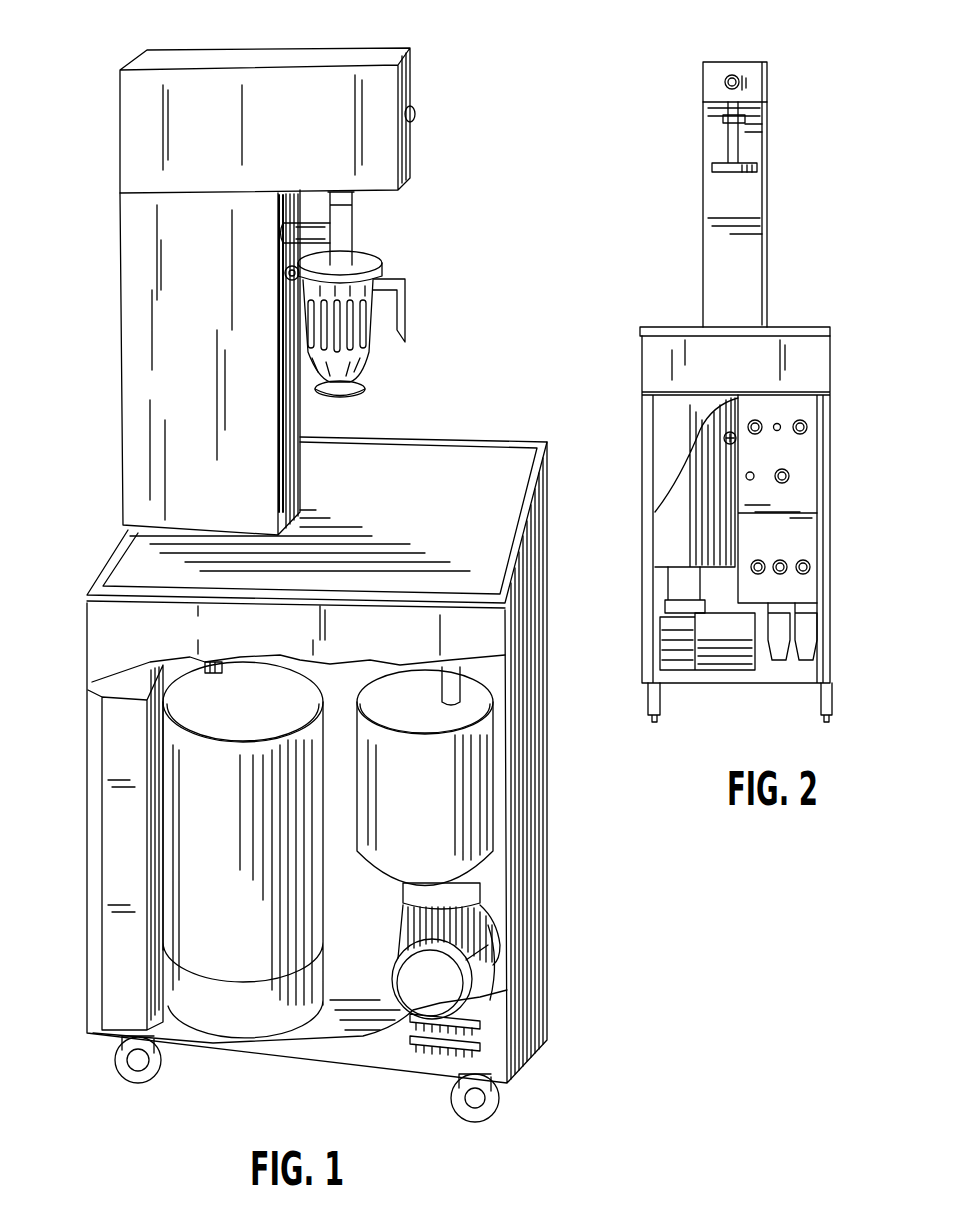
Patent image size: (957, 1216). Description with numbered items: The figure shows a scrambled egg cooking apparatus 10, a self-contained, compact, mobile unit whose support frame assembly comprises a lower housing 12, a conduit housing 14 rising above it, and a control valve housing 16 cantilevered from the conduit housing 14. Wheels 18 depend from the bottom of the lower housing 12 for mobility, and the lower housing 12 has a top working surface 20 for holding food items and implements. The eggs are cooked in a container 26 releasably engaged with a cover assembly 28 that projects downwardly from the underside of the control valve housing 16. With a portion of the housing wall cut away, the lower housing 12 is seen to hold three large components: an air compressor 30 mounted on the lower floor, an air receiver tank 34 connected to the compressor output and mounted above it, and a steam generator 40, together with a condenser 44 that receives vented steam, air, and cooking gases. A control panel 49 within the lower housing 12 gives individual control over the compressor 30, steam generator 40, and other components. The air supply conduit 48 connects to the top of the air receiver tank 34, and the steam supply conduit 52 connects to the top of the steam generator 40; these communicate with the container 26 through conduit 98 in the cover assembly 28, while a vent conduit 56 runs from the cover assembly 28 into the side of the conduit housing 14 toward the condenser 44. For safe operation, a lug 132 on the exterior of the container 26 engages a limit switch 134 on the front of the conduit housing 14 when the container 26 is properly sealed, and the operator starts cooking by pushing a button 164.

In FIG. 1, the scrambled egg cooking apparatus 10 is at (462, 400).
In FIG. 1, the lower housing 12 is at (558, 811).
In FIG. 2, the lower housing 12 is at (631, 431).
In FIG. 1, the conduit housing 14 is at (110, 323).
In FIG. 2, the conduit housing 14 is at (778, 220).
In FIG. 1, the control valve housing 16 is at (372, 52).
In FIG. 2, the control valve housing 16 is at (778, 75).
In FIG. 1, the wheels 18 is at (140, 1085).
In FIG. 2, the wheels 18 is at (653, 720).
In FIG. 1, the top working surface 20 is at (510, 492).
In FIG. 2, the top working surface 20 is at (800, 325).
In FIG. 1, the container 26 is at (372, 370).
In FIG. 1, the cover assembly 28 is at (365, 242).
In FIG. 2, the cover assembly 28 is at (757, 148).
In FIG. 1, the air compressor 30 is at (478, 957).
In FIG. 2, the air compressor 30 is at (723, 672).
In FIG. 1, the air receiver tank 34 is at (490, 777).
In FIG. 2, the air receiver tank 34 is at (683, 540).
In FIG. 1, the steam generator 40 is at (300, 937).
In FIG. 1, the condenser 44 is at (112, 942).
In FIG. 1, the air supply conduit 48 is at (462, 686).
In FIG. 2, the control panel 49 is at (805, 500).
In FIG. 1, the steam supply conduit 52 is at (212, 670).
In FIG. 1, the vent conduit 56 is at (310, 222).
In FIG. 1, the conduit 98 is at (354, 212).
In FIG. 1, the lug 132 is at (290, 305).
In FIG. 1, the limit switch 134 is at (285, 290).
In FIG. 1, the button 164 is at (416, 113).
In FIG. 2, the button 164 is at (722, 83).